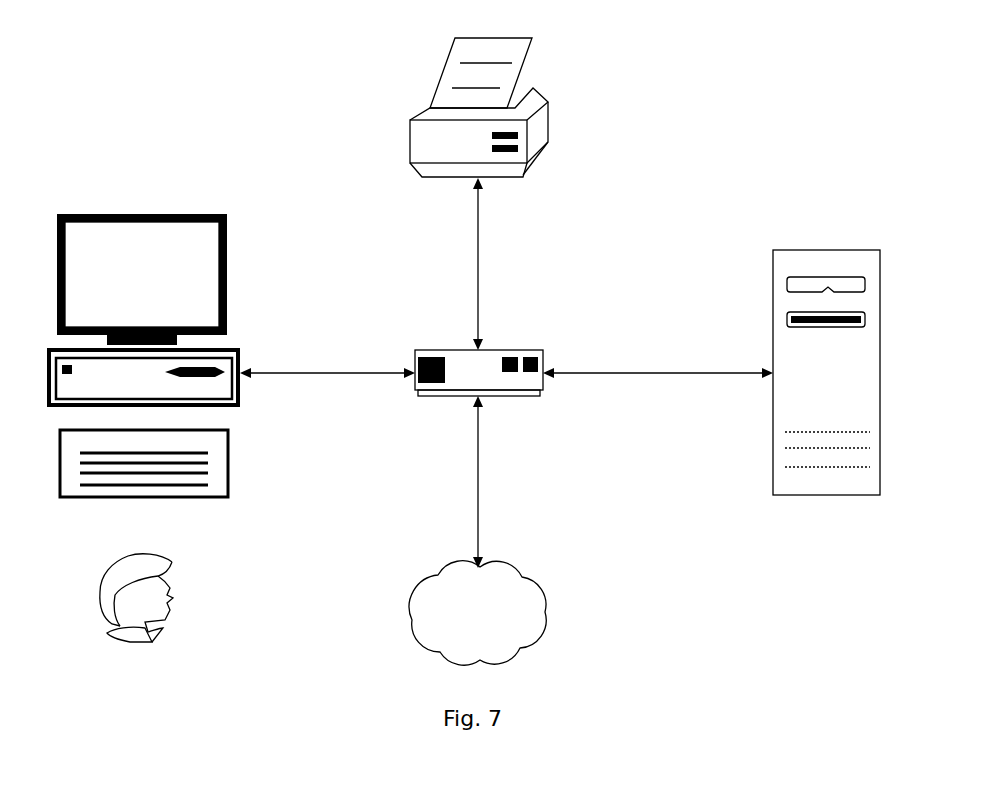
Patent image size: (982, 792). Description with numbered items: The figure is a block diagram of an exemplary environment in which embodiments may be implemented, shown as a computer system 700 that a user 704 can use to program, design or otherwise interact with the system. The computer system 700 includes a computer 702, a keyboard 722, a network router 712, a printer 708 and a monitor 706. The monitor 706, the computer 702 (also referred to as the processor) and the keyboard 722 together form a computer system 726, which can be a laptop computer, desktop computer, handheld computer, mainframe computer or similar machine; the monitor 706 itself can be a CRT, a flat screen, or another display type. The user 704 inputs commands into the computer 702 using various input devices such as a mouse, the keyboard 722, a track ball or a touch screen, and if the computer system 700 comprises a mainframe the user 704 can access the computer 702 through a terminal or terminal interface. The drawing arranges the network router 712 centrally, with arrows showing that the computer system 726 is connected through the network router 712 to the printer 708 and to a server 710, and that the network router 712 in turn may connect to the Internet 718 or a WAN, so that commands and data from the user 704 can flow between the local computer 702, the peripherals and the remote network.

The computer system 700 is at (541, 312).
The computer 702 is at (240, 350).
The user 704 is at (165, 560).
The monitor 706 is at (226, 214).
The printer 708 is at (410, 154).
The server 710 is at (773, 474).
The network router 712 is at (507, 350).
The Internet 718 is at (513, 563).
The keyboard 722 is at (228, 462).
The computer system 726 is at (230, 268).